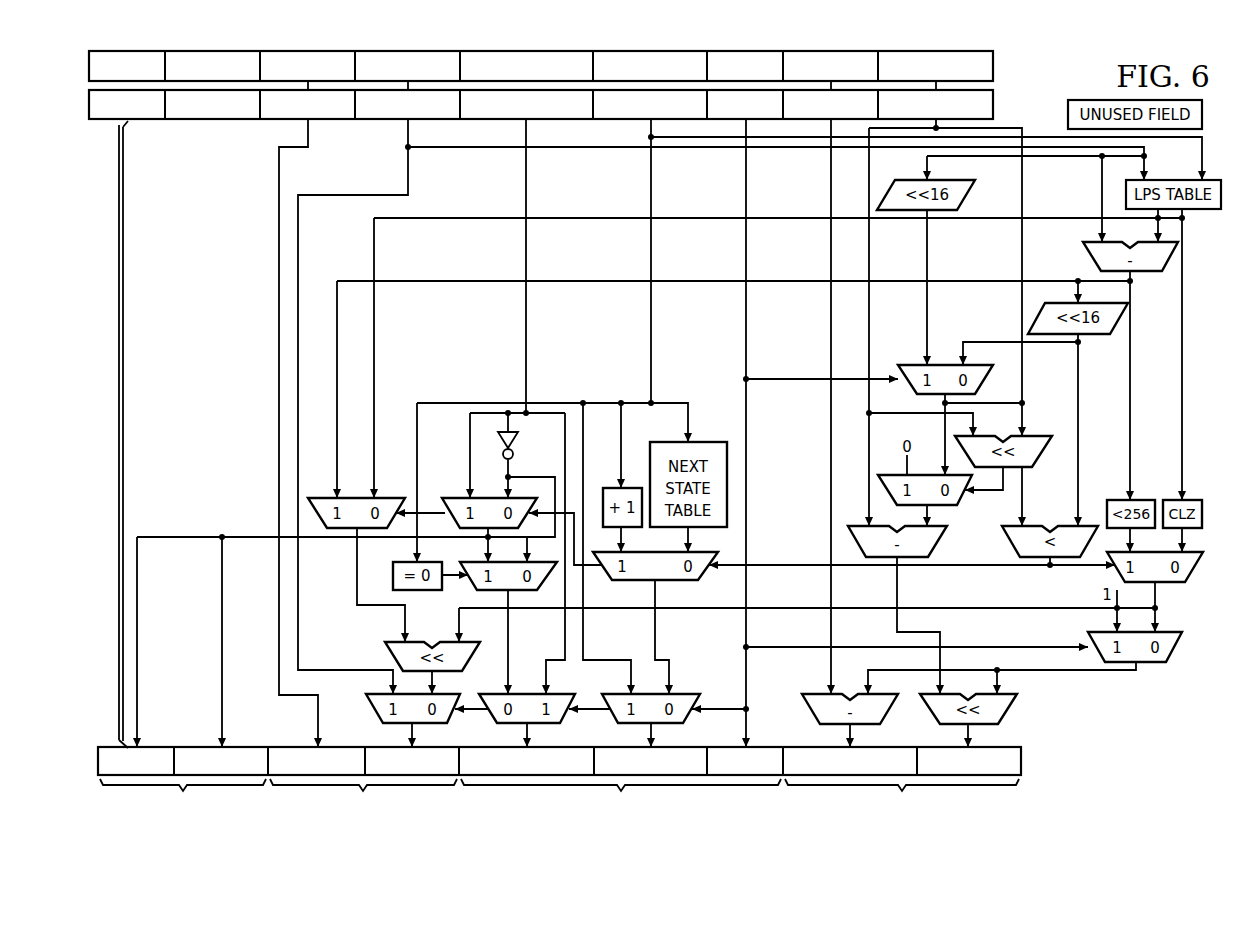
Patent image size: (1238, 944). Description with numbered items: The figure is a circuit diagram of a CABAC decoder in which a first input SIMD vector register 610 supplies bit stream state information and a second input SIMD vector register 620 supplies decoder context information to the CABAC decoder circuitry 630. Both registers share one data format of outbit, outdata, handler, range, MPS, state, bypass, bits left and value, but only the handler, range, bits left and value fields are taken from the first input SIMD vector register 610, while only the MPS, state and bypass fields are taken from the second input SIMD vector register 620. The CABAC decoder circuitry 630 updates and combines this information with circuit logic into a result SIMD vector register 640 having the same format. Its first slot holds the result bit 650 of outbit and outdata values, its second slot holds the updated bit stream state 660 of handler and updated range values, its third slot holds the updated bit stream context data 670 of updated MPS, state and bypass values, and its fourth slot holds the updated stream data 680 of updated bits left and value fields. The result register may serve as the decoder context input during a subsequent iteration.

The first input SIMD vector register 610 is at (999, 66).
The second input SIMD vector register 620 is at (222, 124).
The CABAC decoder circuitry 630 is at (118, 428).
The result SIMD vector register 640 is at (1036, 768).
The result bit 650 is at (183, 810).
The updated bit stream state 660 is at (363, 810).
The updated bit stream context data 670 is at (621, 810).
The updated stream data 680 is at (902, 810).